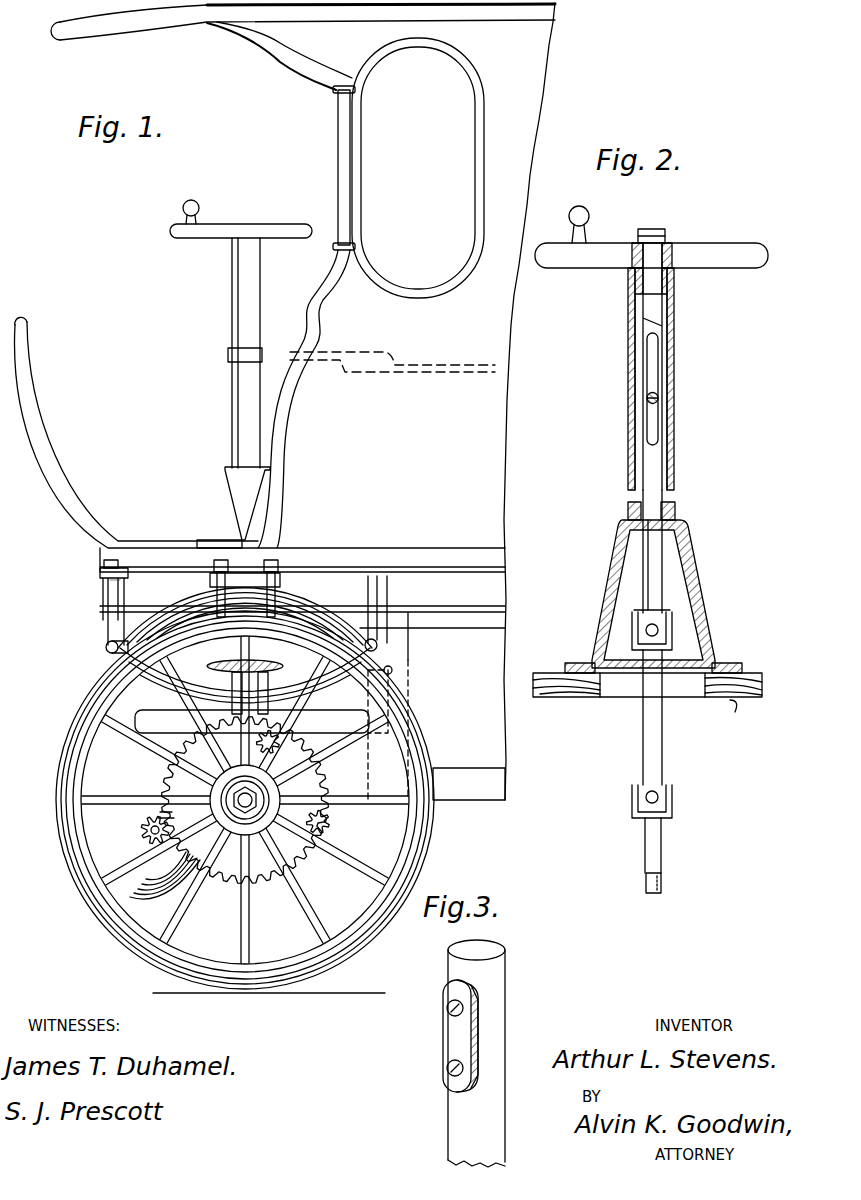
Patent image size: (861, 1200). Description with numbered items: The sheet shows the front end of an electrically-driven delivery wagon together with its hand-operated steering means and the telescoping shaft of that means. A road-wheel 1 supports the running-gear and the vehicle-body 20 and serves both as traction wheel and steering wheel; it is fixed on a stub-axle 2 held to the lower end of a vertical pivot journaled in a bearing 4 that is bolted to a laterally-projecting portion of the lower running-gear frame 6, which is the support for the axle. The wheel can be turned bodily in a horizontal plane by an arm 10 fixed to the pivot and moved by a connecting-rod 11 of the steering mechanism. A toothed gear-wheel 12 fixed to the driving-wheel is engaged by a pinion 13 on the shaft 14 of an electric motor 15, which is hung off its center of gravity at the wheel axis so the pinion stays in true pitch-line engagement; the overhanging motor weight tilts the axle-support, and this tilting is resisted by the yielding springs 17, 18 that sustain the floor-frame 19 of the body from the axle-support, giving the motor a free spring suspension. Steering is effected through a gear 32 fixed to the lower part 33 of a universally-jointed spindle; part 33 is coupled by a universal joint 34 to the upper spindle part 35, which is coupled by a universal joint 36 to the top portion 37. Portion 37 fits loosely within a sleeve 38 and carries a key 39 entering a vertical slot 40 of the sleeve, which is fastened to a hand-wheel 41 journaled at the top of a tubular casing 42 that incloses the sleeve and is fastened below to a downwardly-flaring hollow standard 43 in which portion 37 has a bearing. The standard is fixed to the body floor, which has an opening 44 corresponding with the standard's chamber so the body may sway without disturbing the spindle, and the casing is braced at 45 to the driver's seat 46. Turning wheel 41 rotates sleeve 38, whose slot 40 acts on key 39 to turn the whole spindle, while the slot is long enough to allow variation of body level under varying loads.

In FIG. 1, the road-wheel 1 is at (85, 700).
In FIG. 1, the stub-axle 2 is at (246, 806).
In FIG. 1, the bearing 4 is at (266, 739).
In FIG. 1, the lower running-gear frame 6 is at (252, 723).
In FIG. 1, the arm 10 is at (300, 658).
In FIG. 1, the connecting-rod 11 is at (280, 770).
In FIG. 1, the toothed gear-wheel 12 is at (308, 824).
In FIG. 1, the pinion 13 is at (160, 812).
In FIG. 1, the shaft 14 is at (143, 836).
In FIG. 1, the motor 15 is at (120, 855).
In FIG. 1, the side springs 17 is at (245, 637).
In FIG. 1, the springs 18 is at (105, 612).
In FIG. 1, the floor-frame 19 is at (276, 589).
In FIG. 1, the vehicle-body 20 is at (285, 401).
In FIG. 2, the vehicle-body 20 is at (740, 697).
In FIG. 1, the gear 32 is at (228, 662).
In FIG. 2, the lower spindle part 33 is at (660, 843).
In FIG. 2, the universal joint 34 is at (632, 812).
In FIG. 2, the upper spindle part 35 is at (648, 750).
In FIG. 2, the universal joint 36 is at (662, 652).
In FIG. 2, the top spindle portion 37 is at (648, 583).
In FIG. 3, the top spindle portion 37 is at (500, 1097).
In FIG. 2, the sleeve 38 is at (662, 355).
In FIG. 2, the key 39 is at (656, 418).
In FIG. 3, the key 39 is at (446, 1027).
In FIG. 2, the vertical slot 40 is at (650, 375).
In FIG. 1, the hand-wheel 41 is at (245, 233).
In FIG. 2, the hand-wheel 41 is at (651, 237).
In FIG. 1, the tubular casing 42 is at (232, 283).
In FIG. 2, the tubular casing 42 is at (628, 508).
In FIG. 1, the hollow standard 43 is at (225, 497).
In FIG. 2, the hollow standard 43 is at (700, 602).
In FIG. 2, the opening 44 is at (647, 684).
In FIG. 1, the brace 45 is at (262, 353).
In FIG. 1, the driver's seat 46 is at (432, 373).